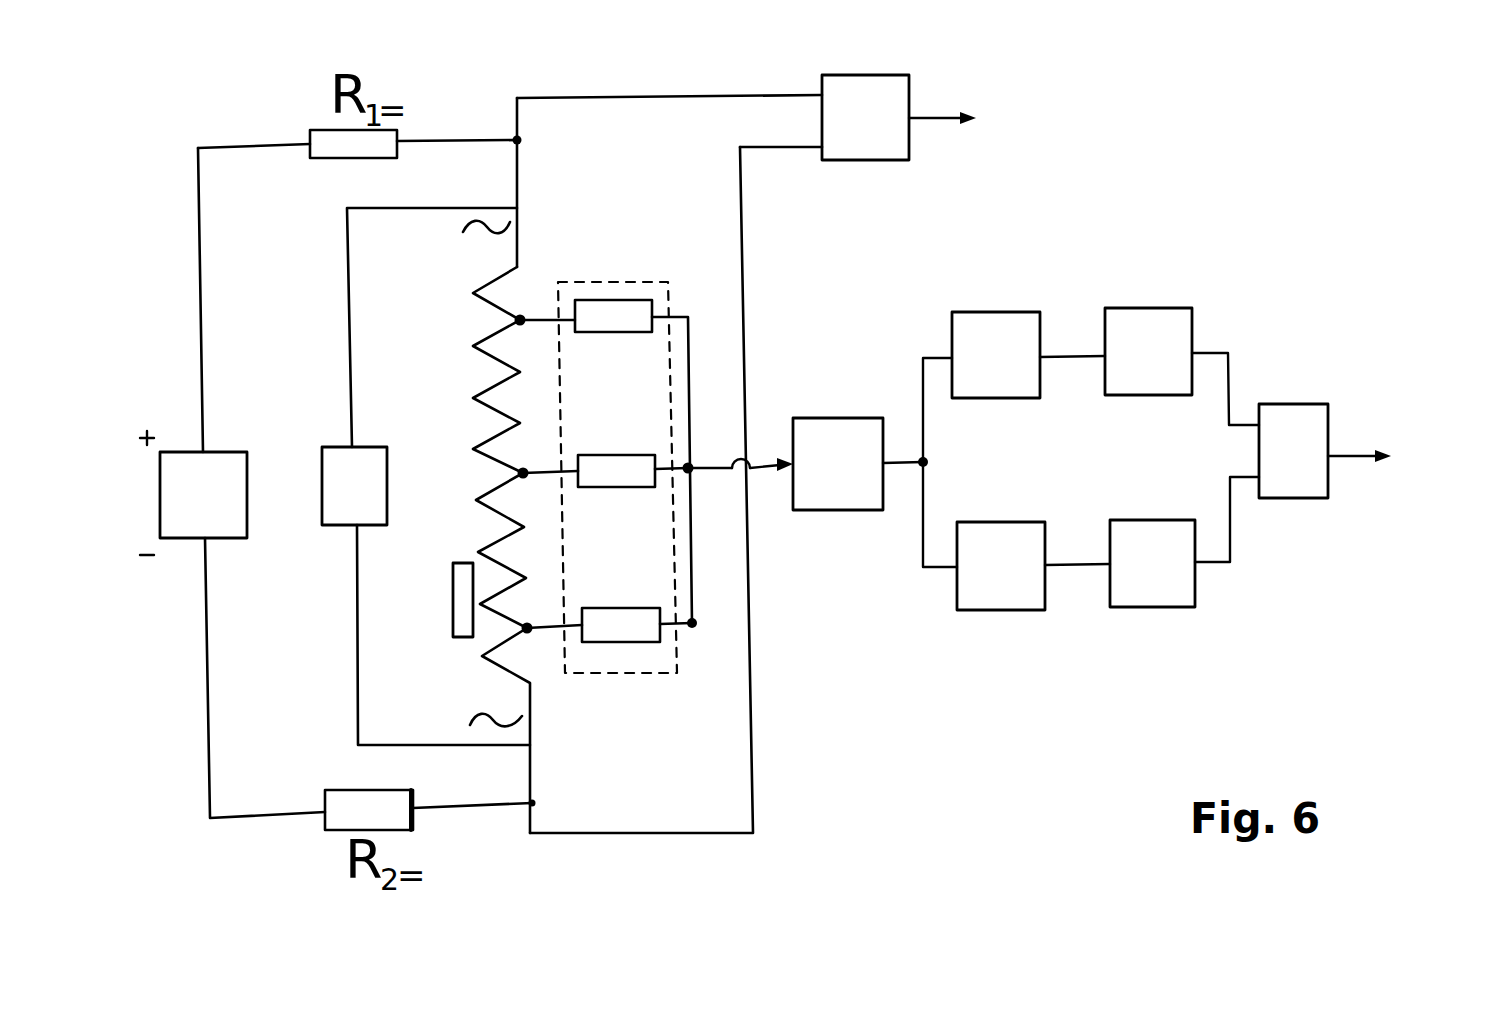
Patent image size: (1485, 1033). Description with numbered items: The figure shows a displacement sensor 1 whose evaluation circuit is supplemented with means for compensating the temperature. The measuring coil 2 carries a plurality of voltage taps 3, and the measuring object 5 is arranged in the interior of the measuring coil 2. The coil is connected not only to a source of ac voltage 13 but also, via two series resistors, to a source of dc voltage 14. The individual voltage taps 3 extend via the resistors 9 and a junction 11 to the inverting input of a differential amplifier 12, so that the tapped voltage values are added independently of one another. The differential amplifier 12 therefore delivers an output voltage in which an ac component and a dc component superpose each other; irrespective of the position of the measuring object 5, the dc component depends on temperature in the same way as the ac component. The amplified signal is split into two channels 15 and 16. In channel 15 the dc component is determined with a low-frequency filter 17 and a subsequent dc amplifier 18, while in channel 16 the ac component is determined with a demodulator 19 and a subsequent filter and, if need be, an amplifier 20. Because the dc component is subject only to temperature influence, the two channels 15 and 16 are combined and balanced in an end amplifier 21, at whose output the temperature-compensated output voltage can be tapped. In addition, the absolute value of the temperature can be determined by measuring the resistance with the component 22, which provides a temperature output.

The displacement sensor 1 is at (803, 752).
The measuring coil 2 is at (500, 382).
The voltage taps 3 is at (522, 317).
The measuring object 5 is at (458, 611).
The resistors 9 is at (632, 633).
The junction 11 is at (692, 472).
The differential amplifier 12 is at (860, 464).
The source of ac voltage 13 is at (354, 486).
The source of dc voltage 14 is at (193, 493).
The channel 15 is at (942, 568).
The channel 16 is at (937, 358).
The low-frequency filter 17 is at (1033, 566).
The dc amplifier 18 is at (1184, 542).
The demodulator 19 is at (1028, 355).
The filter and amplifier 20 is at (1182, 366).
The end amplifier 21 is at (1366, 451).
The component 22 is at (914, 117).